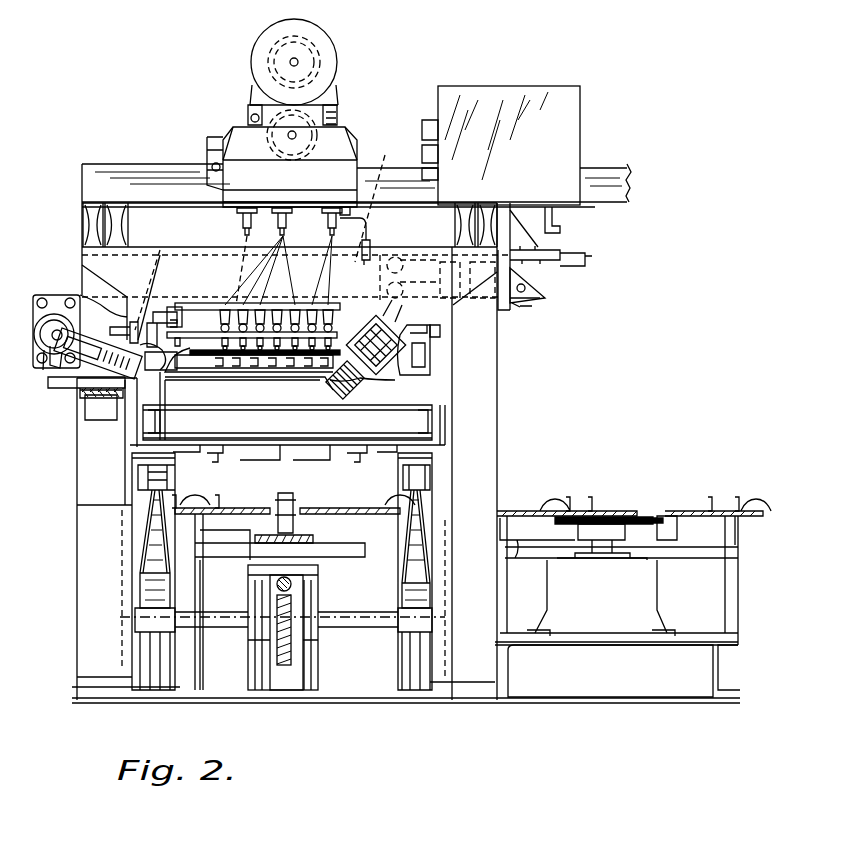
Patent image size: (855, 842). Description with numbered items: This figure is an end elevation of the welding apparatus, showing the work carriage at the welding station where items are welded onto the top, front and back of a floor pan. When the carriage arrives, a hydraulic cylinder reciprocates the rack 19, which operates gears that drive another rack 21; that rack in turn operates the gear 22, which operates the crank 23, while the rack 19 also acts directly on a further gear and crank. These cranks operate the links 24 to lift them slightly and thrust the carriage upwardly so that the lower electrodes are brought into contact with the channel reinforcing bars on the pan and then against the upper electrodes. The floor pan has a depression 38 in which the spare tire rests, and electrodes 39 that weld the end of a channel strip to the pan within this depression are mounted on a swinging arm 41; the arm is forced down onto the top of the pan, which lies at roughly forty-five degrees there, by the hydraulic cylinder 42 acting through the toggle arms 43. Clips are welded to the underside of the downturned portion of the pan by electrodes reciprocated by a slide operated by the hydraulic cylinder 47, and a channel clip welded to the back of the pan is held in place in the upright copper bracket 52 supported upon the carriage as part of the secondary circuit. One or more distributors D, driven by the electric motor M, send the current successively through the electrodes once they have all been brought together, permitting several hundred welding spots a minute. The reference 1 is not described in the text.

The electric motor M is at (330, 45).
The distributor D is at (352, 130).
The carriage 1 is at (405, 428).
The rack 19 is at (292, 585).
The rack 21 is at (292, 661).
The gear 22 is at (285, 668).
The crank 23 is at (150, 621).
The link 24 is at (153, 535).
The depression 38 is at (414, 364).
The electrode 39 is at (345, 388).
The swinging arm 41 is at (467, 174).
The hydraulic cylinder 42 is at (502, 306).
The toggle arm 43 is at (410, 255).
The hydraulic cylinder 47 is at (62, 302).
The upright copper bracket 52 is at (440, 330).